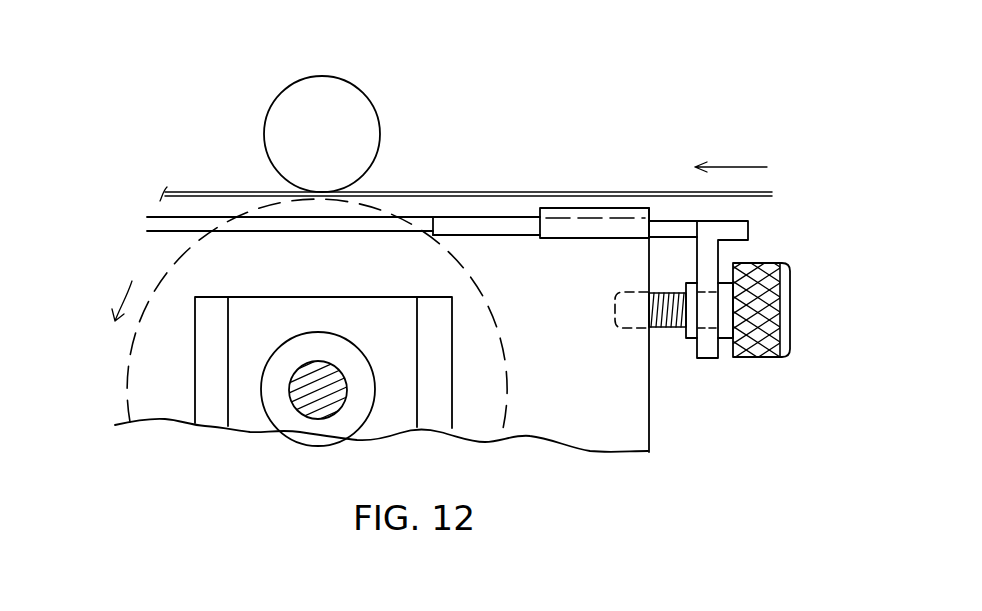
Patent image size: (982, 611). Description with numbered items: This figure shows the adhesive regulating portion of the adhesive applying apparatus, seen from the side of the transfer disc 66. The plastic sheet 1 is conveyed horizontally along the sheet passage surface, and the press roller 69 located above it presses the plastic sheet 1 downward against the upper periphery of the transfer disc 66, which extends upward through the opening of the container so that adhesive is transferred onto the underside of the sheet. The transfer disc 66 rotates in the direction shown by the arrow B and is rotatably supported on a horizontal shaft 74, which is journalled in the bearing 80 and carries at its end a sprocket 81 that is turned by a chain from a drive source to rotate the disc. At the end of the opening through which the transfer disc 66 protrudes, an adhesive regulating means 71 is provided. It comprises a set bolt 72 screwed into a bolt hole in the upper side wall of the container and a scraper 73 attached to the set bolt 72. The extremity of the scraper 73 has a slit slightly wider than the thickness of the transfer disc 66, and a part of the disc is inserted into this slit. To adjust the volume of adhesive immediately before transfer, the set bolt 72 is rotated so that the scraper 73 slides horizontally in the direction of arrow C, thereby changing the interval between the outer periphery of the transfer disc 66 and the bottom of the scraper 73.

The plastic sheet 1 is at (487, 192).
The transfer disc 66 is at (142, 356).
The press roller 69 is at (278, 95).
The adhesive regulating means 71 is at (817, 305).
The set bolt 72 is at (757, 358).
The scraper 73 is at (677, 218).
The horizontal shaft 74 is at (312, 408).
The bearing 80 is at (335, 307).
The sprocket 81 is at (260, 401).
The rotation direction of transfer disc B is at (124, 284).
The sliding direction of scraper C is at (732, 150).